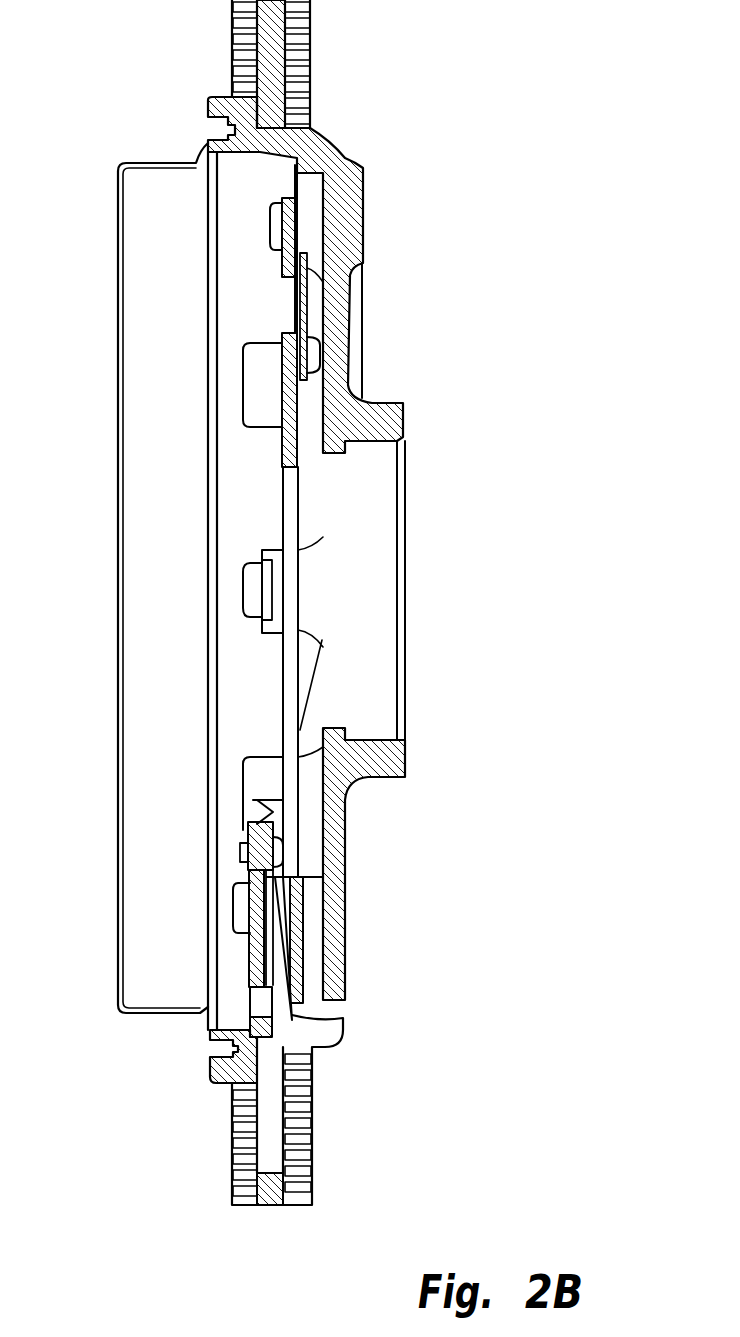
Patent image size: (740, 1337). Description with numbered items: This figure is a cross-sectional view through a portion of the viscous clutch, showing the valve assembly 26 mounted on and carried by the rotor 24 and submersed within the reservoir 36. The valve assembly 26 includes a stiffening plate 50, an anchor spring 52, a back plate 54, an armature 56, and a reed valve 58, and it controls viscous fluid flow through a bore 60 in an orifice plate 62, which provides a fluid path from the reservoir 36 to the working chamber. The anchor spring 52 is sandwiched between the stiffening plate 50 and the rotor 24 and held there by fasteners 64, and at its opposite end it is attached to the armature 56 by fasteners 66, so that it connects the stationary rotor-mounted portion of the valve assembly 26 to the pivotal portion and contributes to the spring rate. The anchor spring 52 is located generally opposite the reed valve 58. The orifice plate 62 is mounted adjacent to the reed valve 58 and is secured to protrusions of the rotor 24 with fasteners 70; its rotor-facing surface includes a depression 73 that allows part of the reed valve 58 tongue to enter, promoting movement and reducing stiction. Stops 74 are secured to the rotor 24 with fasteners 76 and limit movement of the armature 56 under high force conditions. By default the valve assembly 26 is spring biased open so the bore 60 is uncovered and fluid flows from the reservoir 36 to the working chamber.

The rotor 24 is at (300, 52).
The reservoir 36 is at (118, 210).
The fasteners 64 is at (268, 220).
The stiffening plate 50 is at (288, 268).
The anchor spring 52 is at (292, 322).
The back plate 54 is at (306, 300).
The fasteners 66 is at (316, 352).
The valve assembly 26 is at (282, 454).
The stops 74 is at (248, 578).
The fasteners 76 is at (250, 600).
The fasteners 70 is at (243, 908).
The depression 73 is at (256, 942).
The orifice plate 62 is at (257, 960).
The bore 60 is at (260, 1007).
The armature 56 is at (302, 935).
The reed valve 58 is at (345, 1018).